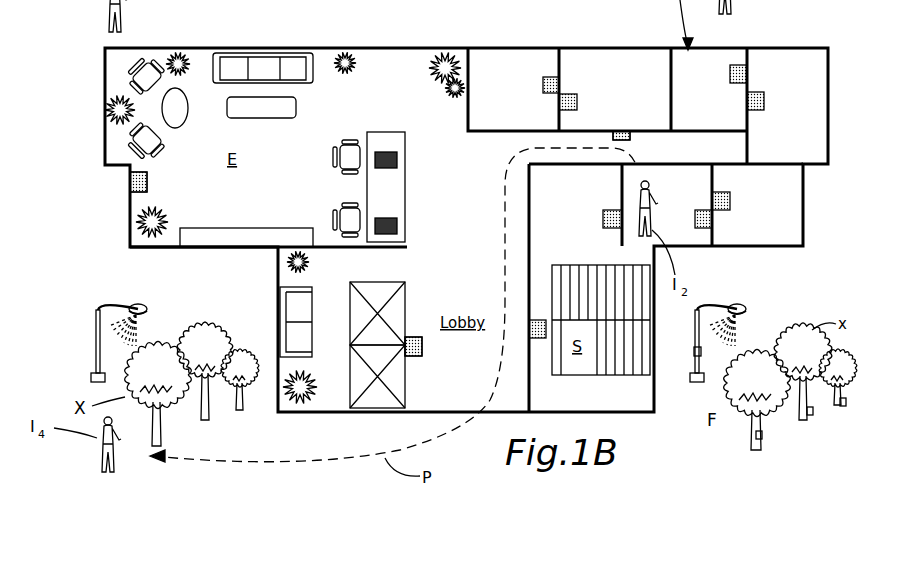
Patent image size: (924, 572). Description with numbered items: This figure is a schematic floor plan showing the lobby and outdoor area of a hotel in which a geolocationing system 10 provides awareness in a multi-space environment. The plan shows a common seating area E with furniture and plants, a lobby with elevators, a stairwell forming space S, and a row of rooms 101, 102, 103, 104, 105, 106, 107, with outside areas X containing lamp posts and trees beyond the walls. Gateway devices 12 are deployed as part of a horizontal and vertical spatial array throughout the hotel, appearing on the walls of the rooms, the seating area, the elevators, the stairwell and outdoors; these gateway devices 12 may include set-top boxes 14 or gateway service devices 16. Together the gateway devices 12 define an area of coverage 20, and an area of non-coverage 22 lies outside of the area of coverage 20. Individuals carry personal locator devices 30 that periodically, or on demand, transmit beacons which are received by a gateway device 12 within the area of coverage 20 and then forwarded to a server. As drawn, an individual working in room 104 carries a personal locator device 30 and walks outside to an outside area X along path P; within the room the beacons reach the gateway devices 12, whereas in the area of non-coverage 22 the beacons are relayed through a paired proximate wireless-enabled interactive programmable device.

The geolocationing system 10 is at (88, 60).
The gateway device 12 is at (568, 94).
The set-top box 14 is at (703, 210).
The gateway service device 16 is at (622, 140).
The area of coverage 20 is at (796, 312).
The area of non-coverage 22 is at (78, 325).
The personal locator device 30 is at (650, 182).
The room 101 is at (513, 89).
The room 102 is at (575, 205).
The room 103 is at (615, 89).
The room 104 is at (667, 205).
The room 105 is at (709, 89).
The room 106 is at (757, 205).
The room 107 is at (787, 106).